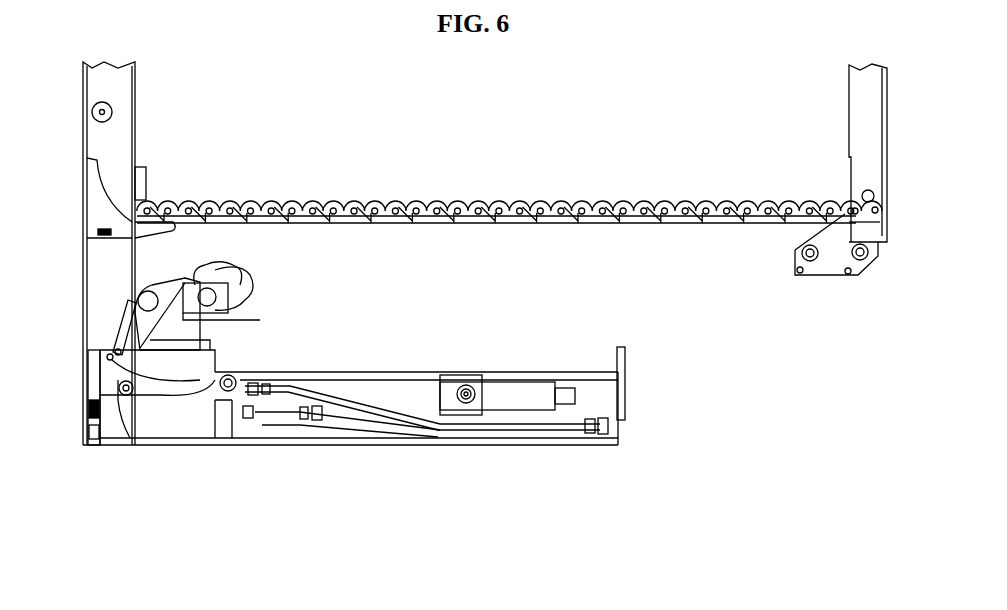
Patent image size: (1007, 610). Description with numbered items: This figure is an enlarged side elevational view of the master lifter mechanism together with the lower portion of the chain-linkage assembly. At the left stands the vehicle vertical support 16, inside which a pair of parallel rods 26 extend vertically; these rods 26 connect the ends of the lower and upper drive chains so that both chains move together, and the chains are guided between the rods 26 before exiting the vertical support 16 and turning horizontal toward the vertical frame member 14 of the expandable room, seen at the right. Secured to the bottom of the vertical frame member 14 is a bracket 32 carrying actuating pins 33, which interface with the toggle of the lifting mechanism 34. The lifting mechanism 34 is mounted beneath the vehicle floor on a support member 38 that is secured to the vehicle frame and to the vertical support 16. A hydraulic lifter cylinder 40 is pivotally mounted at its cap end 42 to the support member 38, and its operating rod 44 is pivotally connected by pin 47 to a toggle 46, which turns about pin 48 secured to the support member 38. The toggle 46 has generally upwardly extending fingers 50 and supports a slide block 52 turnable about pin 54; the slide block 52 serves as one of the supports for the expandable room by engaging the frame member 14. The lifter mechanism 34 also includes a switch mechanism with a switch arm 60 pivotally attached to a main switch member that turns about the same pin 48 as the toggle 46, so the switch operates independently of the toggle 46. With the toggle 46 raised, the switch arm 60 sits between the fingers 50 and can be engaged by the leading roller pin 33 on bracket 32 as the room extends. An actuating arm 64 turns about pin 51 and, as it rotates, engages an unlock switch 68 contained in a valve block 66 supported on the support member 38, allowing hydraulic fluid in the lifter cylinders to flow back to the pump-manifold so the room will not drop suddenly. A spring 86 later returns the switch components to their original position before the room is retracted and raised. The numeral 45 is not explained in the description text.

The vertical frame member 14 is at (849, 112).
The vehicle vertical support 16 is at (137, 113).
The parallel rods 26 is at (627, 201).
The bracket 32 is at (795, 262).
The actuating pins 33 is at (815, 262).
The lifting mechanism 34 is at (392, 319).
The support member 38 is at (627, 382).
The hydraulic lifter cylinder 40 is at (375, 378).
The cap end 42 is at (475, 387).
The operating rod 44 is at (200, 385).
The pin 45 is at (118, 350).
The toggle 46 is at (150, 290).
The pin 47 is at (128, 405).
The pin 48 is at (205, 343).
The fingers 50 is at (255, 295).
The pin 51 is at (240, 380).
The slide block 52 is at (215, 320).
The pin 54 is at (230, 290).
The switch arm 60 is at (220, 268).
The actuating arm 64 is at (193, 410).
The valve block 66 is at (265, 440).
The unlock switch 68 is at (230, 440).
The spring 86 is at (120, 330).